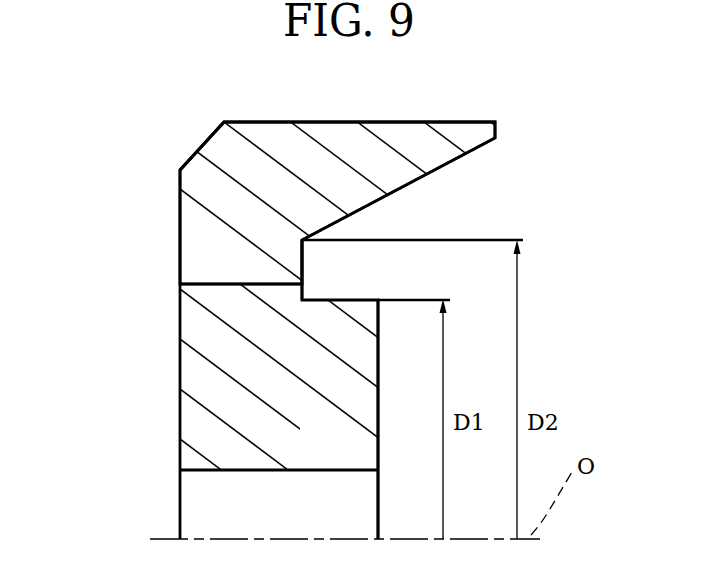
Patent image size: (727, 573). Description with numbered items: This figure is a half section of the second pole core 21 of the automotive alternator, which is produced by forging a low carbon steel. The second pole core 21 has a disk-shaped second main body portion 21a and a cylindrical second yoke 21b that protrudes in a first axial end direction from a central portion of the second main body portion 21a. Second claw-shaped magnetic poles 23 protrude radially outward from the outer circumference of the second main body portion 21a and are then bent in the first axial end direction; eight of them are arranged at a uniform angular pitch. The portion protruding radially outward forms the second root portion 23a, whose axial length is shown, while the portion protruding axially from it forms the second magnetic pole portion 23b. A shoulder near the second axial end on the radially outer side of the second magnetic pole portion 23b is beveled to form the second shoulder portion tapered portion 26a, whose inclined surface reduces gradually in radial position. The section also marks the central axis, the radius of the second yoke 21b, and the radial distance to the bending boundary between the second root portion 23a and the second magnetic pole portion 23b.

The second pole core 21 is at (60, 98).
The second main body portion 21a is at (240, 363).
The second yoke 21b is at (362, 402).
The second claw-shaped magnetic poles 23 is at (52, 172).
The second root portion 23a is at (196, 265).
The second magnetic pole portion 23b is at (288, 185).
The second shoulder portion tapered portion 26a is at (214, 133).